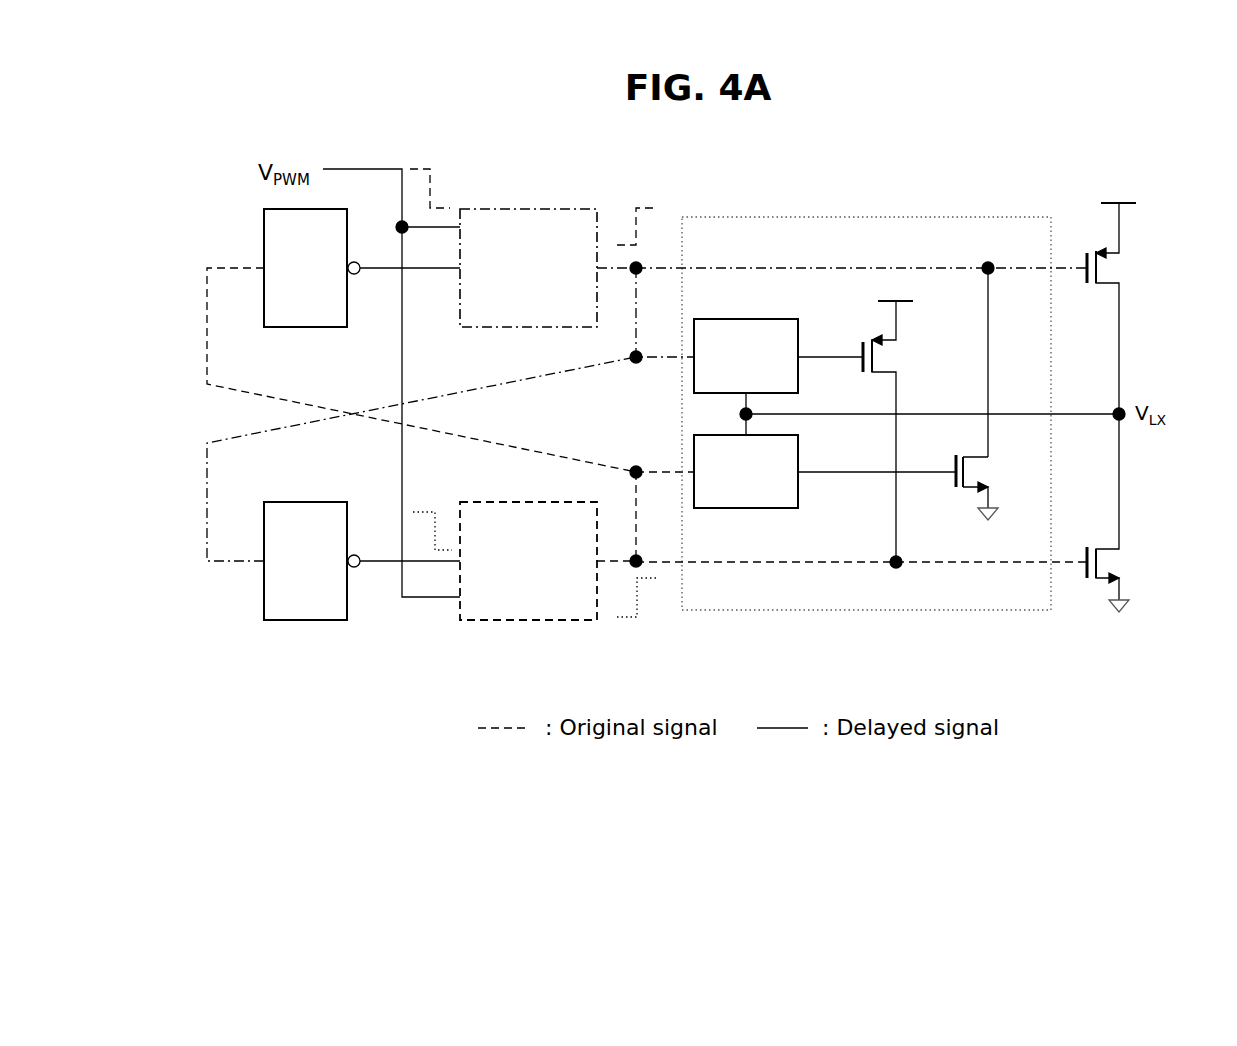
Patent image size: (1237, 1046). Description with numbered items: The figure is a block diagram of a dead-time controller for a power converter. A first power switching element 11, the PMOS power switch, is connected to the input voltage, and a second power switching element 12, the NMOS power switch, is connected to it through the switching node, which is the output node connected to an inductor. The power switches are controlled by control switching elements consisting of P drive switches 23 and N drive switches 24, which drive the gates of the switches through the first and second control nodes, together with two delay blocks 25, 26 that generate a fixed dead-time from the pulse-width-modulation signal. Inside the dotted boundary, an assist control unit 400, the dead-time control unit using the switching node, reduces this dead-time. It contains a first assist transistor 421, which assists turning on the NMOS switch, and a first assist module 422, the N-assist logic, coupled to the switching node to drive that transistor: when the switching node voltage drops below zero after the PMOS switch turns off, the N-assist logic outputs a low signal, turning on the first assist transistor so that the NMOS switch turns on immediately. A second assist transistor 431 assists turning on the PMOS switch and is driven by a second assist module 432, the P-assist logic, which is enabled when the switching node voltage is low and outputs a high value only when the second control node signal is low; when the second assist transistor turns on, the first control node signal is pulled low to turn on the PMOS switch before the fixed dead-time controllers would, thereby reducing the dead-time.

The first power switching element 11 is at (1162, 268).
The second power switching element 12 is at (1162, 562).
The P drive switches 23 is at (522, 209).
The N drive switches 24 is at (528, 621).
The delay 25 is at (264, 233).
The delay 26 is at (264, 598).
The assist control unit 400 is at (1018, 217).
The first assist transistor 421 is at (936, 355).
The first assist module 422 is at (746, 319).
The second assist transistor 431 is at (1036, 470).
The second assist module 432 is at (746, 509).